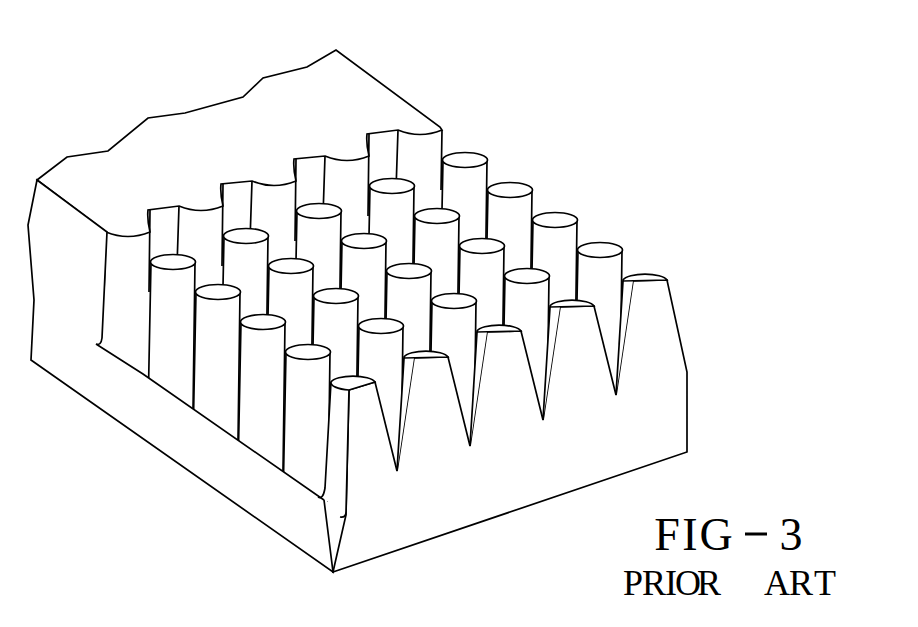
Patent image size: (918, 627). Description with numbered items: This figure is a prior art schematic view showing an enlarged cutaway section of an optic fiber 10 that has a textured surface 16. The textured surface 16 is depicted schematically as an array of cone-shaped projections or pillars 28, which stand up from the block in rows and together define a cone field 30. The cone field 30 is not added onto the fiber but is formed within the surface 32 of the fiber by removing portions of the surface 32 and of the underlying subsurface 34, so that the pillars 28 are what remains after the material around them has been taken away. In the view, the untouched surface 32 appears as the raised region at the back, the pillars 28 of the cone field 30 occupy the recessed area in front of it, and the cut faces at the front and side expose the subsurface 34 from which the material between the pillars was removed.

The fiber 10 is at (390, 293).
The textured surface 16 is at (450, 304).
The cone-shaped projections or pillars 28 is at (612, 272).
The cone field 30 is at (538, 207).
The surface 32 is at (228, 135).
The subsurface 34 is at (590, 433).